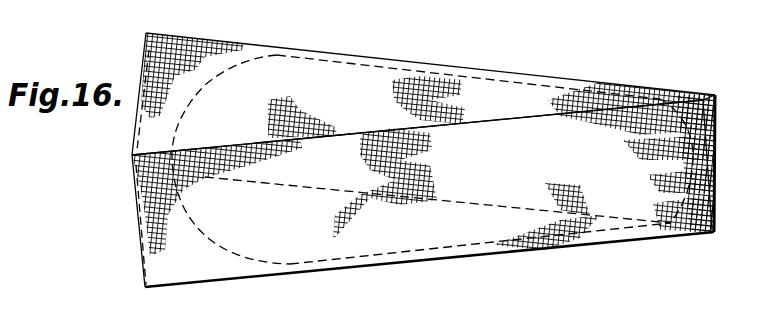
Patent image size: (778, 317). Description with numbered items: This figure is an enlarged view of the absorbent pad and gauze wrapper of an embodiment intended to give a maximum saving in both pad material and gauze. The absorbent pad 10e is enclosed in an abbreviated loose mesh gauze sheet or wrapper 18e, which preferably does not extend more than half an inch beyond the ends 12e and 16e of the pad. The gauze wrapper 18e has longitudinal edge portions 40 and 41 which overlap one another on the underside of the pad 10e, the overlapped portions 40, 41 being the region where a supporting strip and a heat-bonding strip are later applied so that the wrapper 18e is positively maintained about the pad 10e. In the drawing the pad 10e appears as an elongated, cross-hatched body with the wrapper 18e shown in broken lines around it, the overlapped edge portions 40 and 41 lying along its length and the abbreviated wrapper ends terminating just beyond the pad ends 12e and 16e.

The absorbent pad 10e is at (390, 63).
The end of pad 12e is at (205, 82).
The end of pad 16e is at (672, 222).
The gauze sheet or wrapper 18e is at (139, 243).
The longitudinal edge portion 40 is at (514, 212).
The longitudinal edge portion 41 is at (528, 113).